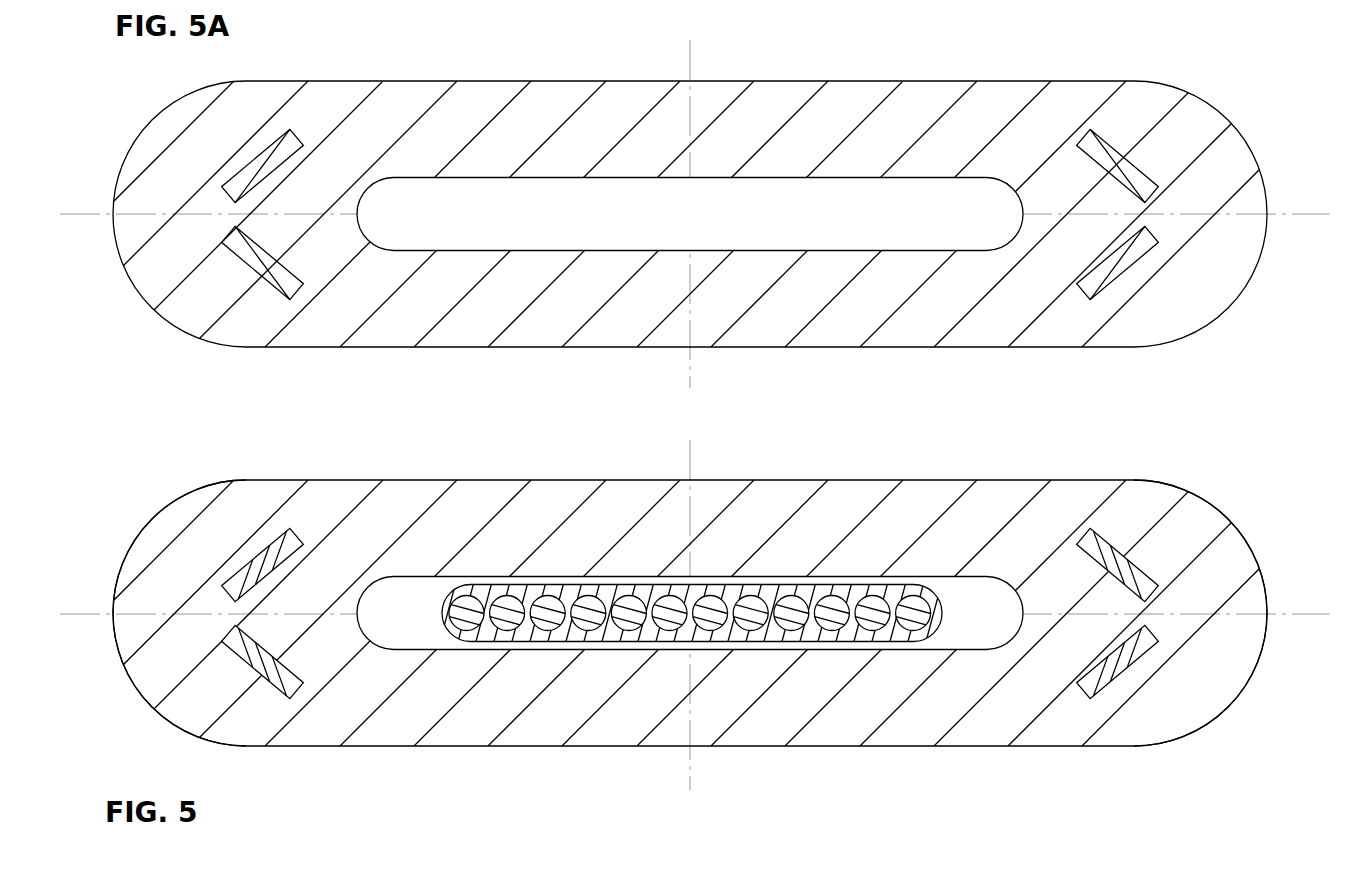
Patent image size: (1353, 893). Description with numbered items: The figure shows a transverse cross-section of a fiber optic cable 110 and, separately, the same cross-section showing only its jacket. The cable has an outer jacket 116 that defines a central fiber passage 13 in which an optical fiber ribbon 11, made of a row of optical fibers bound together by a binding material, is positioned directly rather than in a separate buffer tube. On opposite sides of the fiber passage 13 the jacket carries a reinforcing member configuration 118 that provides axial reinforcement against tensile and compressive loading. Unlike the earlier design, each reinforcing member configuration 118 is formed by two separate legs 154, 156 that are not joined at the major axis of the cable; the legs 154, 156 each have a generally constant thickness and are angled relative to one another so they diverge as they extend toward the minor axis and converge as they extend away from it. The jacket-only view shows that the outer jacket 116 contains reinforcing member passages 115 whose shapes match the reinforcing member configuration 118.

In FIG. 5, the optical fiber ribbon 11 is at (845, 597).
In FIG. 5A, the fiber passage 13 is at (745, 197).
In FIG. 5, the fiber optic cable 110 is at (163, 482).
In FIG. 5A, the reinforcing member passages 115 is at (1097, 143).
In FIG. 5A, the outer jacket 116 is at (1083, 350).
In FIG. 5, the outer jacket 116 is at (806, 478).
In FIG. 5, the reinforcing member configuration 118 is at (217, 602).
In FIG. 5, the leg 154 is at (270, 545).
In FIG. 5, the leg 156 is at (248, 652).